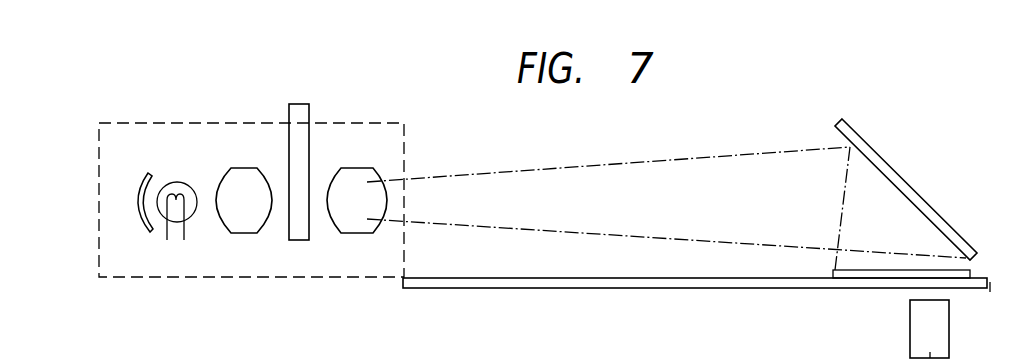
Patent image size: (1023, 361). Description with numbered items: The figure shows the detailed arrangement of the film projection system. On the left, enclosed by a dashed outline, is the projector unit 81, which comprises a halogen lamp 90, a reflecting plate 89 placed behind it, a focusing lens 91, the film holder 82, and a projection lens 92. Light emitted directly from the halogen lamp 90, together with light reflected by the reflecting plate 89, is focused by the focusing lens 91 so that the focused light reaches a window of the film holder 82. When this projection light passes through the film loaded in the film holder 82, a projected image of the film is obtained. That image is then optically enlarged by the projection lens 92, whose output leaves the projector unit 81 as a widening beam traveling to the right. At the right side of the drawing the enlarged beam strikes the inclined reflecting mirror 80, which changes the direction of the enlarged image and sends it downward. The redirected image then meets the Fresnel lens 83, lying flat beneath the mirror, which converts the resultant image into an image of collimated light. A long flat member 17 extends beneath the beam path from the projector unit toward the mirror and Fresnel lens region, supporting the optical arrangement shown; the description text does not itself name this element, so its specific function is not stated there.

The plate 17 is at (582, 288).
The reflecting mirror 80 is at (868, 157).
The projector unit 81 is at (405, 157).
The film holder 82 is at (309, 112).
The Fresnel lens 83 is at (860, 278).
The reflecting plate 89 is at (150, 232).
The halogen lamp 90 is at (178, 182).
The focusing lens 91 is at (245, 233).
The projection lens 92 is at (361, 233).